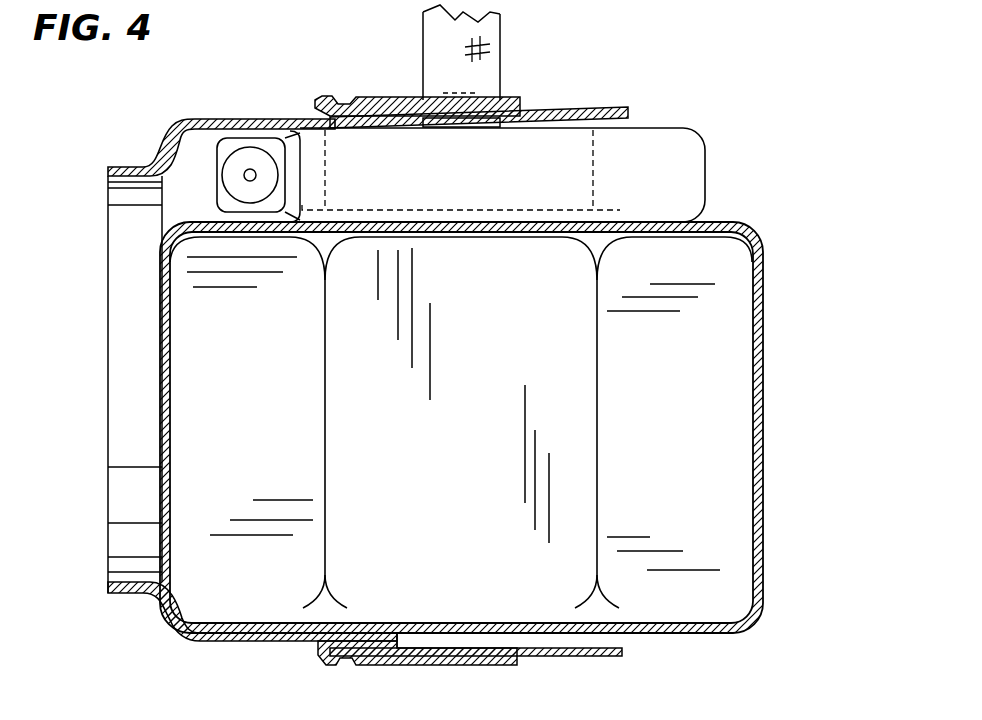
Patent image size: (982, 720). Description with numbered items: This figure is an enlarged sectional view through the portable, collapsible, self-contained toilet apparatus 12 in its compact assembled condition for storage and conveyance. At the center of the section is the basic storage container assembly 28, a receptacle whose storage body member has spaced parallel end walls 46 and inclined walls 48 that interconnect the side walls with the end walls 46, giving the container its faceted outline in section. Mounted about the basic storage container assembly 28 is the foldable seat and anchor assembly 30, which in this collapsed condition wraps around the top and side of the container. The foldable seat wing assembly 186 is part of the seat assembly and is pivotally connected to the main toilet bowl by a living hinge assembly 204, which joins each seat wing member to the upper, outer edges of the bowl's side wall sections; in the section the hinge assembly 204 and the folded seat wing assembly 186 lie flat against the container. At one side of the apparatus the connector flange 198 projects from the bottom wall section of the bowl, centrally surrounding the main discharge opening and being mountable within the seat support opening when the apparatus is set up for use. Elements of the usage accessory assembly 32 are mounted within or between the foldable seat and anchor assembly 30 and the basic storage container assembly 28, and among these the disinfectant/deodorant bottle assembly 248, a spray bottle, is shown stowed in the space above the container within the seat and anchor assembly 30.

The portable, collapsible, self-contained toilet apparatus 12 is at (667, 72).
The basic storage container assembly 28 is at (756, 228).
The foldable seat and anchor assembly 30 is at (197, 119).
The usage accessory assembly 32 is at (691, 118).
The end walls 46 is at (512, 342).
The inclined walls 48 is at (240, 355).
The foldable seat wing assembly 186 is at (548, 108).
The connector flange 198 is at (132, 165).
The living hinge assembly 204 is at (378, 97).
The disinfectant/deodorant bottle assembly 248 is at (693, 158).